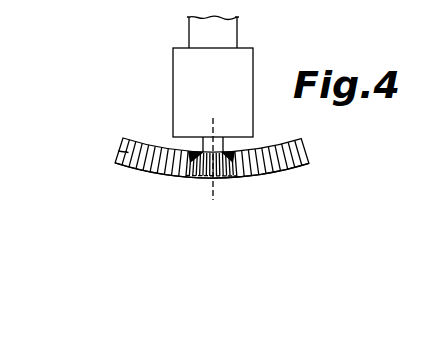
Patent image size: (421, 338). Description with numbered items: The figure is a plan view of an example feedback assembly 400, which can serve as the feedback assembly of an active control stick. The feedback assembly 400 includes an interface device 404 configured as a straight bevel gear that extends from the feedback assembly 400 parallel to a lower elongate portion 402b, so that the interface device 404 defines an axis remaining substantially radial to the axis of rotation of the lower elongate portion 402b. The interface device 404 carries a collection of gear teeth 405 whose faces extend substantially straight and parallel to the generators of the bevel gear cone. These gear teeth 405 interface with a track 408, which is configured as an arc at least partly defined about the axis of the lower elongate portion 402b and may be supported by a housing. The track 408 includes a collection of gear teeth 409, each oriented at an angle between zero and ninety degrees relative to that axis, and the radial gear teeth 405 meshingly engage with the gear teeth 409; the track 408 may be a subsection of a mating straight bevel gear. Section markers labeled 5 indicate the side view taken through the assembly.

The feedback assembly 400 is at (181, 88).
The lower elongate portion 402b is at (231, 36).
The interface device 404 is at (222, 177).
The gear teeth 405 is at (236, 158).
The track 408 is at (121, 152).
The gear teeth 409 is at (145, 171).
The section line 5- 5 is at (242, 113).